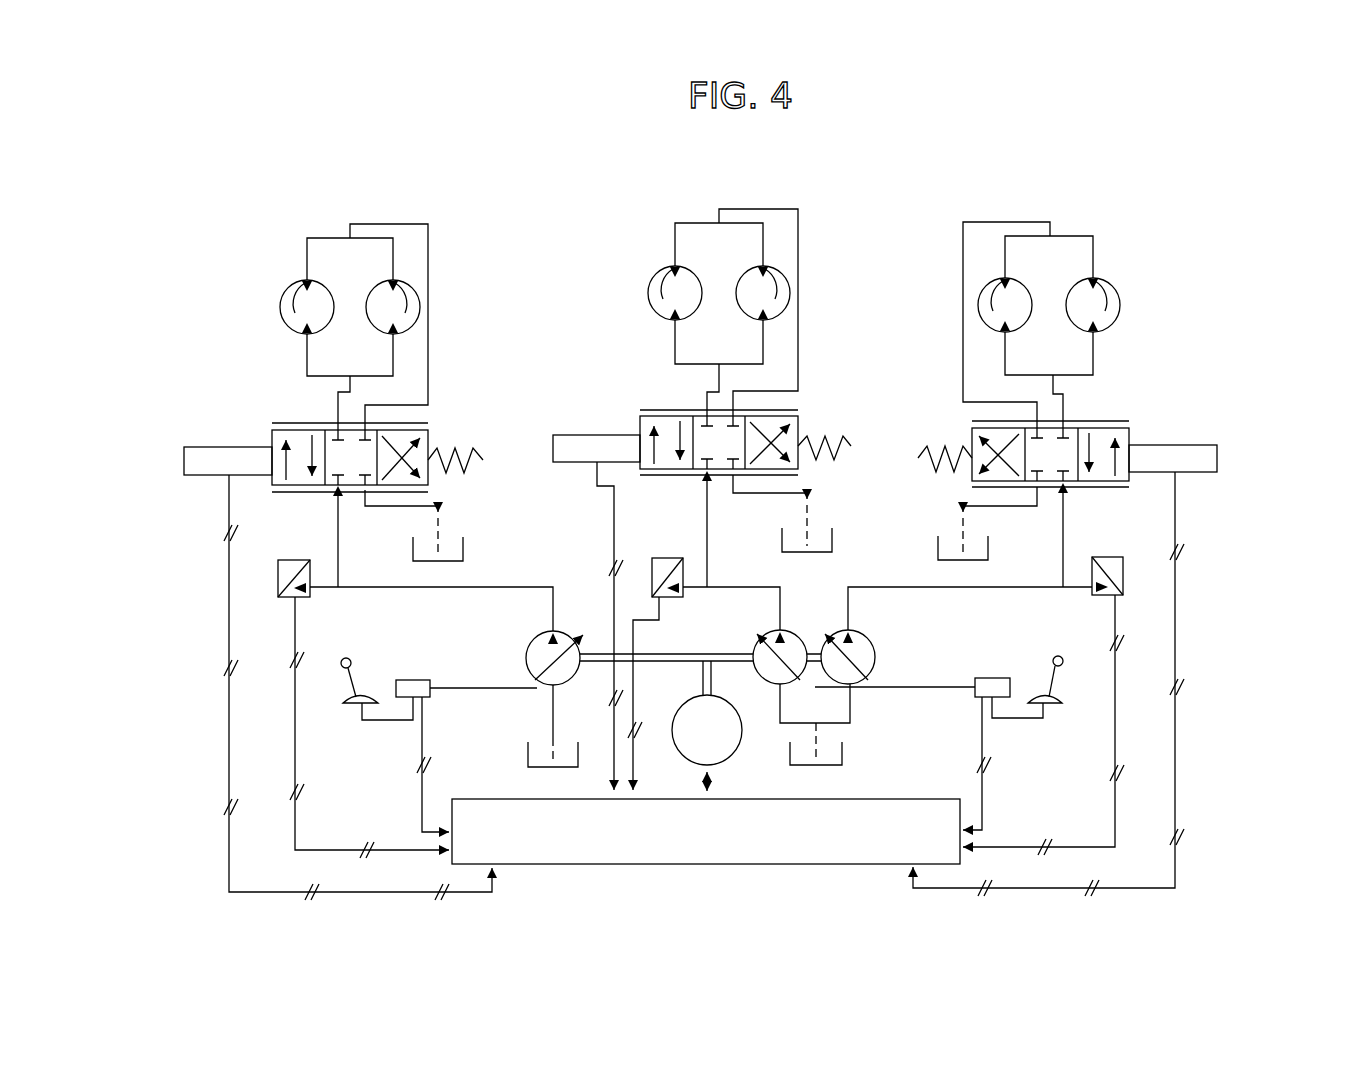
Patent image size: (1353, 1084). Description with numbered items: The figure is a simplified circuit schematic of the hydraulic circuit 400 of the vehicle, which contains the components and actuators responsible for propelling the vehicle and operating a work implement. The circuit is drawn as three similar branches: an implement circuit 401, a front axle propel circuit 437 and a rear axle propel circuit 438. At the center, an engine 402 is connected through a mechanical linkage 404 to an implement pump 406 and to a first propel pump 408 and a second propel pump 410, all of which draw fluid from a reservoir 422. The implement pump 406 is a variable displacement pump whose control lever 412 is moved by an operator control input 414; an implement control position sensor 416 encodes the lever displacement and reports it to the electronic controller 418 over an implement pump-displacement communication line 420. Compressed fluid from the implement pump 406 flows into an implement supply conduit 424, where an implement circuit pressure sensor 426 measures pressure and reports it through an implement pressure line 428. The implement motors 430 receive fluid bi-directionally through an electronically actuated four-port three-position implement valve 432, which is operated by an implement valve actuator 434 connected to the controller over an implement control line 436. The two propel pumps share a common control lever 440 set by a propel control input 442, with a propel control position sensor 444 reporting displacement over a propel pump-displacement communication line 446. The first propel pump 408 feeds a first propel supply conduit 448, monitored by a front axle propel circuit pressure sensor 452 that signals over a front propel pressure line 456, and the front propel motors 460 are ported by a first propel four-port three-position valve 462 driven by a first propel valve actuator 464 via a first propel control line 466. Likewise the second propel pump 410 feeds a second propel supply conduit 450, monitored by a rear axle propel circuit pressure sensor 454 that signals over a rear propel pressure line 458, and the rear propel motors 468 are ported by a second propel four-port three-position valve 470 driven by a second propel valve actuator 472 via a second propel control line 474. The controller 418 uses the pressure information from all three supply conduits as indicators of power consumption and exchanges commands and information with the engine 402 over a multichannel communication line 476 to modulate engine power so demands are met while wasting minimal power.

The hydraulic circuit 400 is at (193, 196).
The implement circuit 401 is at (464, 210).
The front axle propel circuit 437 is at (822, 217).
The rear axle propel circuit 438 is at (1127, 221).
The implement motors 430 is at (298, 300).
The implement 4-port 3-position valve 432 is at (428, 440).
The implement valve actuator 434 is at (230, 455).
The implement control line 436 is at (229, 707).
The implement circuit pressure sensor 426 is at (302, 565).
The implement supply conduit 424 is at (495, 585).
The implement pressure line 428 is at (302, 850).
The control input 414 is at (352, 657).
The implement control position sensor 416 is at (415, 680).
The control lever 412 is at (515, 690).
The implement pump-displacement communication line 420 is at (416, 752).
The implement pump 406 is at (530, 642).
The mechanical linkage 404 is at (660, 655).
The engine 402 is at (727, 757).
The multichannel communication line 476 is at (700, 784).
The first propel pump 408 is at (763, 640).
The second propel pump 410 is at (867, 638).
The reservoir 422 is at (455, 545).
The front propel motors 460 is at (665, 290).
The first propel 4-port 3-position valve 462 is at (795, 430).
The first propel valve actuator 464 is at (600, 438).
The first propel control line 466 is at (615, 543).
The front axle propel circuit pressure sensor 452 is at (680, 558).
The first propel supply conduit 448 is at (718, 587).
The front propel pressure line 456 is at (634, 680).
The rear propel motors 468 is at (992, 304).
The second propel valve actuator 472 is at (1212, 466).
The second propel 4-port 3-position valve 470 is at (1127, 442).
The second propel control line 474 is at (1176, 635).
The rear axle propel circuit pressure sensor 454 is at (1107, 560).
The second propel supply conduit 450 is at (940, 587).
The rear propel pressure line 458 is at (1117, 793).
The common control lever 440 is at (940, 688).
The propel control position sensor 444 is at (1002, 682).
The propel control input 442 is at (1056, 656).
The propel pump-displacement communication line 446 is at (983, 782).
The electronic controller 418 is at (632, 866).